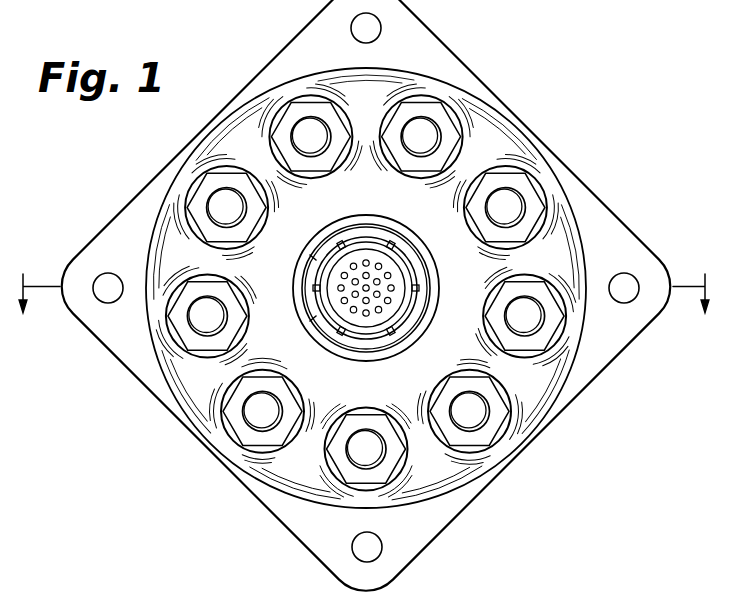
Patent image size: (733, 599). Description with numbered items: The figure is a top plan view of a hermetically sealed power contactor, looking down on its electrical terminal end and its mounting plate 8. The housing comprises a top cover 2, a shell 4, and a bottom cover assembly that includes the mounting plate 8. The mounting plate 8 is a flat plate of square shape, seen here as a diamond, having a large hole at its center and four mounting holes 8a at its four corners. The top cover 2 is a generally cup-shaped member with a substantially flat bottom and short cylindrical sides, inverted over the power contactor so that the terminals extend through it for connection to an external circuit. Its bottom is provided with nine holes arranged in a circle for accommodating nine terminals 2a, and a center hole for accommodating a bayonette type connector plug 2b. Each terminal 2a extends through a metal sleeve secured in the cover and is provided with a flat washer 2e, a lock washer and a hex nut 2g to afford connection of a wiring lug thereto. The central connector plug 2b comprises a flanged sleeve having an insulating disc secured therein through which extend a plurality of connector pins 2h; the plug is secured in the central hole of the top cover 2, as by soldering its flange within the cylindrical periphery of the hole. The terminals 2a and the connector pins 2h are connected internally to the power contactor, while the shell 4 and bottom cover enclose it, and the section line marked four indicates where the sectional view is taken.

The top cover 2 is at (213, 137).
The terminal 2a is at (237, 223).
The bayonette type connector plug 2b is at (418, 287).
The flat washer 2e is at (505, 423).
The hex nut 2g is at (478, 436).
The connector pin 2h is at (379, 280).
The mounting plate 8 is at (585, 191).
The mounting hole 8a is at (375, 37).
The shell 4 is at (363, 286).